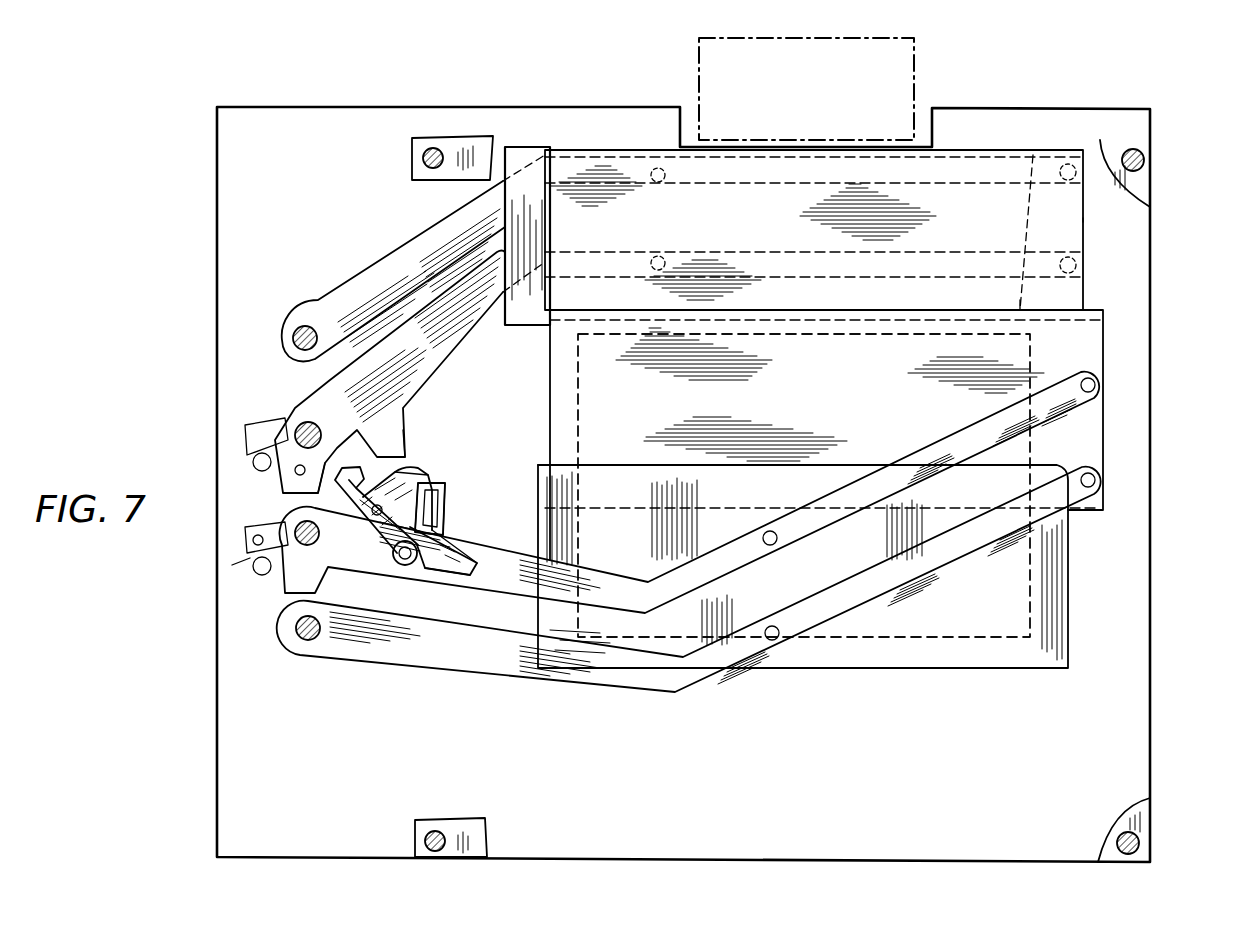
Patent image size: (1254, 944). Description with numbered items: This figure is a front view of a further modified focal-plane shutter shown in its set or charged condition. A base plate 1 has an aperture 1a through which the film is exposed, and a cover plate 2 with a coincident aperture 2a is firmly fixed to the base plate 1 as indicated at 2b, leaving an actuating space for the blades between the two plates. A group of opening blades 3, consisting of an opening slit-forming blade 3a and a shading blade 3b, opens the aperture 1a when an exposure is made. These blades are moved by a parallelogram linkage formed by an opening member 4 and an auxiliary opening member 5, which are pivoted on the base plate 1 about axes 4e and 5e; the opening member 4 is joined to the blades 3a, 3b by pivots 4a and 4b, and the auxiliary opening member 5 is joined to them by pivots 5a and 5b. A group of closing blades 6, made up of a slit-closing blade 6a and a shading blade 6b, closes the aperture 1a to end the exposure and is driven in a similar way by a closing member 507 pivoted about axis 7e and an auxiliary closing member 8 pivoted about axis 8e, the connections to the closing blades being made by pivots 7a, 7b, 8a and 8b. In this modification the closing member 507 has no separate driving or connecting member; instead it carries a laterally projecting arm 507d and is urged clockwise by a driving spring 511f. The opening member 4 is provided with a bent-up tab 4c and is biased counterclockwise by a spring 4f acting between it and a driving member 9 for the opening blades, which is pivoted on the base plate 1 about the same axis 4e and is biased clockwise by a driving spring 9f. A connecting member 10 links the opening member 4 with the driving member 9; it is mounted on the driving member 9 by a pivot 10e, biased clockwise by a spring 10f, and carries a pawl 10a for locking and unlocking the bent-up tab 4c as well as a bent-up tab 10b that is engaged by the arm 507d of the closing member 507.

The base plate 1 is at (1135, 637).
The aperture 1a is at (963, 632).
The aperture 2a is at (804, 485).
The cover plate 2 is at (1135, 810).
The fixing point 2b is at (424, 158).
The group of opening blades 3 is at (883, 489).
The opening slit-forming blade 3a is at (1097, 437).
The shading blade 3b is at (866, 559).
The opening member 4 is at (665, 477).
The pivot 4a is at (1085, 395).
The pivot 4b is at (777, 544).
The bent-up tab 4c is at (450, 492).
The axis 4e is at (328, 541).
The spring 4f is at (278, 575).
The auxiliary opening member 5 is at (685, 583).
The pivot 5a is at (1090, 490).
The pivot 5b is at (771, 625).
The axis 5e is at (300, 636).
The group of closing blades 6 is at (1205, 193).
The slit-closing blade 6a is at (1080, 218).
The shading blade 6b is at (1027, 235).
The pivot 7a is at (1075, 272).
The pivot 7b is at (655, 255).
The axis 7e is at (300, 424).
The auxiliary closing member 8 is at (380, 271).
The pivot 8a is at (1068, 162).
The pivot 8b is at (662, 183).
The axis 8e is at (303, 328).
The driving member 9 is at (378, 600).
The driving spring 9f is at (243, 556).
The connecting member 10 is at (374, 544).
The latch projection 10a is at (418, 478).
The bent-up tab 10b is at (318, 497).
The pivot 10e is at (420, 600).
The spring 10f is at (465, 575).
The closing member 507 is at (369, 372).
The laterally projecting arm 507d is at (410, 412).
The driving spring 511f is at (245, 452).